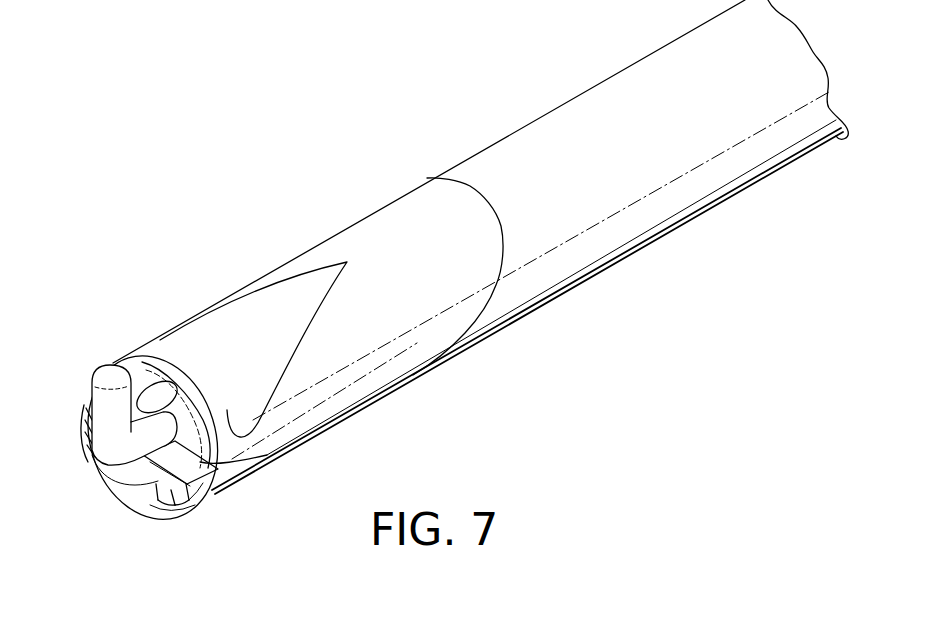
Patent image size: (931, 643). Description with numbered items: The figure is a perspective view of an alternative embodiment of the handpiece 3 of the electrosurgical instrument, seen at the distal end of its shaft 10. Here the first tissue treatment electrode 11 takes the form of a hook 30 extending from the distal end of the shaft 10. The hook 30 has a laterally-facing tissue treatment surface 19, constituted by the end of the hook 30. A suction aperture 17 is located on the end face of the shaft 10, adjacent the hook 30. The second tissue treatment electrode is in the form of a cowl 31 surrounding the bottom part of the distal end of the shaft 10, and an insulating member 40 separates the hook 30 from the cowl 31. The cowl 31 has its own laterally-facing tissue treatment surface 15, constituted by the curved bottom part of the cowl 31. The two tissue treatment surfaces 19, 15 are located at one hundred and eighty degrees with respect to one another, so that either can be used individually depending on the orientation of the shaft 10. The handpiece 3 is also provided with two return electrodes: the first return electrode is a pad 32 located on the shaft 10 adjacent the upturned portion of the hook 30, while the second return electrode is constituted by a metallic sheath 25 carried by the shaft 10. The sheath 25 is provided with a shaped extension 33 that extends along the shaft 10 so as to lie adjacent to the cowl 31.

The handpiece 3 is at (527, 125).
The shaft 10 is at (697, 110).
The first tissue treatment electrode 11 is at (84, 379).
The tissue treatment surface 15 is at (105, 483).
The suction aperture 17 is at (157, 392).
The tissue treatment surface 19 is at (111, 364).
The metallic sheath 25 is at (672, 231).
The hook 30 is at (86, 410).
The cowl 31 is at (181, 512).
The pad 32 is at (236, 310).
The shaped extension 33 is at (487, 334).
The insulating member 40 is at (162, 511).